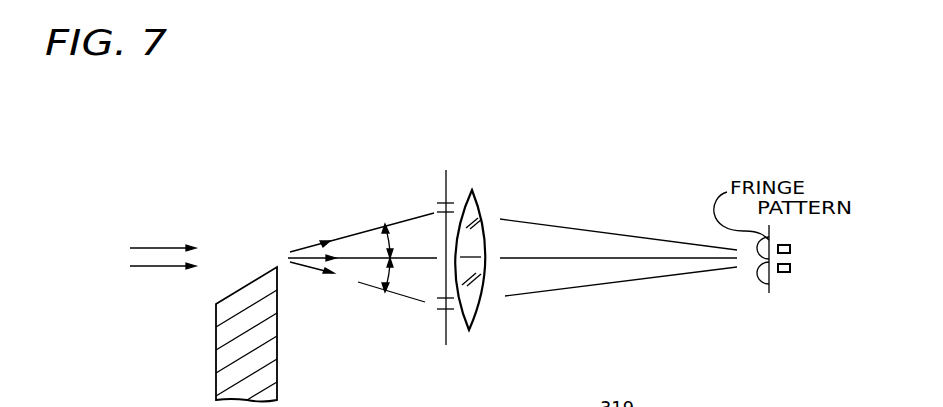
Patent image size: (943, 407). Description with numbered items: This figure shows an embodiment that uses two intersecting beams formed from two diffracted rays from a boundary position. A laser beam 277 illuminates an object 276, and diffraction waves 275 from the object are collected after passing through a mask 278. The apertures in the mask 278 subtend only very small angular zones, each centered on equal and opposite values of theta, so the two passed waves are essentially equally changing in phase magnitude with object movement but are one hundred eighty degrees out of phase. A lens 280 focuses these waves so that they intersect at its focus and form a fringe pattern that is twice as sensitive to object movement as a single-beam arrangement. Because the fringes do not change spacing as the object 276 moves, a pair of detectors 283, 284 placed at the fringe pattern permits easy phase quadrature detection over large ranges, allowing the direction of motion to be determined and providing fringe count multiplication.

The diffraction waves 275 is at (302, 248).
The object 276 is at (216, 362).
The laser beam 277 is at (134, 255).
The mask 278 is at (446, 190).
The lens 280 is at (475, 193).
The detector 283 is at (779, 245).
The detector 284 is at (783, 272).